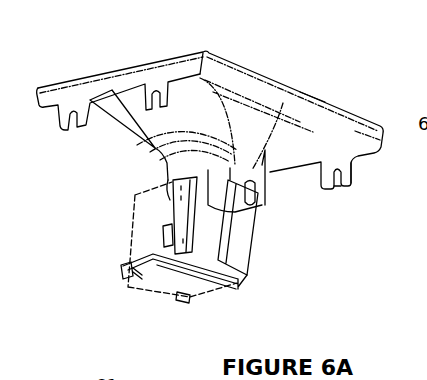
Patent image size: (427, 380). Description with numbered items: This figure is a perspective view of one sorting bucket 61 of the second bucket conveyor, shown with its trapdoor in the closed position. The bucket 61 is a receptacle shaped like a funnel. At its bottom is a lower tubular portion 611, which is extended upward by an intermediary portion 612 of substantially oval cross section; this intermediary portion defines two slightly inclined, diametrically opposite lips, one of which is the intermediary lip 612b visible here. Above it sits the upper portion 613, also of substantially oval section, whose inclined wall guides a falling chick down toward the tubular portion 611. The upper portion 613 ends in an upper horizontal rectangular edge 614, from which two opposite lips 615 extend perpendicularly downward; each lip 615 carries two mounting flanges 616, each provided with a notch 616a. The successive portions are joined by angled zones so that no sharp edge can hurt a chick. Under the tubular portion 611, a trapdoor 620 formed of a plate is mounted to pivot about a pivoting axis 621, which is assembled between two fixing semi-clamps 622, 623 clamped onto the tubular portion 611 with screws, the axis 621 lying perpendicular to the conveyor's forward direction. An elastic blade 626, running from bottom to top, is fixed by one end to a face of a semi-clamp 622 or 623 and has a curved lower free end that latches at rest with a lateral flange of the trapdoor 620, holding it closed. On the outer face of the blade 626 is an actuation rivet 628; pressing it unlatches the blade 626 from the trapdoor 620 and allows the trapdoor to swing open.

The sorting bucket 61 is at (222, 117).
The lower tubular portion 611 is at (170, 178).
The intermediary portion 612 is at (163, 156).
The intermediary lip 612b is at (250, 175).
The upper portion 613 is at (240, 125).
The upper horizontal rectangular edge 614 is at (317, 97).
The lip 615 is at (107, 86).
The mounting flange 616 is at (351, 173).
The notch 616a is at (334, 187).
The trapdoor 620 is at (180, 258).
The pivoting axis 621 is at (120, 272).
The fixing semi-clamp 622 is at (128, 252).
The fixing semi-clamp 623 is at (248, 253).
The elastic blade 626 is at (173, 213).
The actuation rivet 628 is at (163, 237).